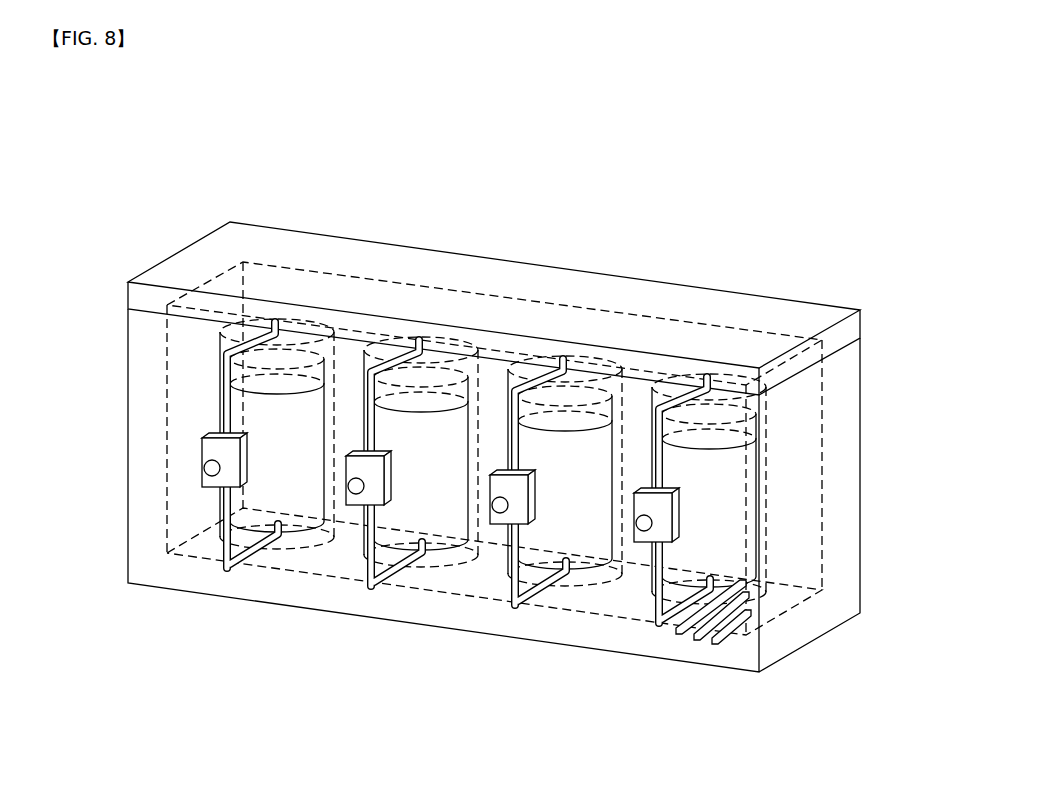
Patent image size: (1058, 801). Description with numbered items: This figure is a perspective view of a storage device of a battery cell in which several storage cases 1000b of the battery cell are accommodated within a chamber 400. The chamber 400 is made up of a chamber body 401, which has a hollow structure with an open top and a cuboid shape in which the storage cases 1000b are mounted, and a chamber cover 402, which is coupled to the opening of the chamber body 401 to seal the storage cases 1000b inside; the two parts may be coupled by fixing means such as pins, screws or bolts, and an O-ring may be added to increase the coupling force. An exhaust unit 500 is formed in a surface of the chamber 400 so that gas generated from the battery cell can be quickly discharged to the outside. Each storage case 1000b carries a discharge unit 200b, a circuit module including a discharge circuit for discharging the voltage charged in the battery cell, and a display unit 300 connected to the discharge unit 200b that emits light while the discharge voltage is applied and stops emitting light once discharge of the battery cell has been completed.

The chamber 400 is at (529, 400).
The chamber body 401 is at (850, 395).
The chamber cover 402 is at (803, 312).
The display unit 300 is at (210, 474).
The discharge unit 200b is at (233, 470).
The storage case 1000b is at (318, 548).
The exhaust unit 500 is at (720, 630).